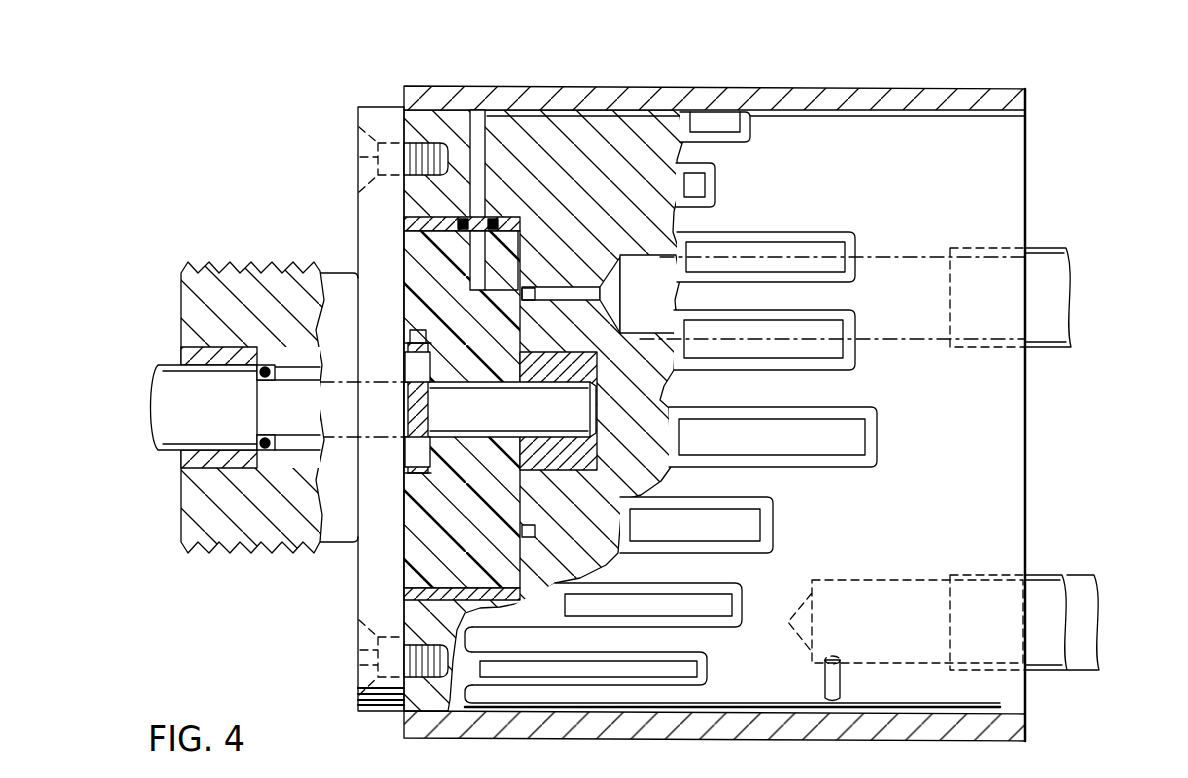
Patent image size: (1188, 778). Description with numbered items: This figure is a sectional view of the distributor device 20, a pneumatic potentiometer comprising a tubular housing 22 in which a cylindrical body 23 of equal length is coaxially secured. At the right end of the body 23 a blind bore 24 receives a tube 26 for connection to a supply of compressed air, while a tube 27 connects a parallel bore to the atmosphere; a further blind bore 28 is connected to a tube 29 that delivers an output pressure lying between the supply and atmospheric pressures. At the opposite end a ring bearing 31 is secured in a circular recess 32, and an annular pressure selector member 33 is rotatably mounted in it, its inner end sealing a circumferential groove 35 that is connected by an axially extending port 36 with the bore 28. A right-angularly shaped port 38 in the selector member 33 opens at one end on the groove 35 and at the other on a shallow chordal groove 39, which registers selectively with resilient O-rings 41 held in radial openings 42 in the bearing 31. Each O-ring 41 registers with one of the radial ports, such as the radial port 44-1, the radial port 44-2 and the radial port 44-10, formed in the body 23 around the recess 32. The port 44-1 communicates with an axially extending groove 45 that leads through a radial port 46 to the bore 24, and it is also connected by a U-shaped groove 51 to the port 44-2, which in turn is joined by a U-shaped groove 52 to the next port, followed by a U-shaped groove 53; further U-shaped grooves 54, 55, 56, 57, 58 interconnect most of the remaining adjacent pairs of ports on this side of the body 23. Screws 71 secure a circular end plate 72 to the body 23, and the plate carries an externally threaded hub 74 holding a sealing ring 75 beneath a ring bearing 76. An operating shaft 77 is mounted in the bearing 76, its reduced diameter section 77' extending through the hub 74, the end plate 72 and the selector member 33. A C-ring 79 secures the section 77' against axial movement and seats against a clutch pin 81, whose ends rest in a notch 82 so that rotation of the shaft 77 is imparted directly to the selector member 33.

The distributor device 20 is at (760, 84).
The tubular housing 22 is at (551, 88).
The cylindrical body 23 is at (1028, 153).
The blind bore 24 is at (896, 580).
The tube 26 is at (1035, 586).
The tube 27 is at (1072, 595).
The blind bore 28 is at (664, 294).
The tube 29 is at (1040, 249).
The ring bearing 31 is at (412, 586).
The circular recess 32 is at (404, 218).
The pressure selector member 33 is at (522, 333).
The circumferential groove 35 is at (528, 300).
The axially extending port 36 is at (568, 289).
The right-angularly shaped port 38 is at (470, 270).
The chordal groove 39 is at (470, 243).
The O-ring 41 is at (495, 225).
The radial opening 42 is at (505, 228).
The radial port 44-1 is at (477, 705).
The radial port 44-2 is at (475, 651).
The radial port 44-10 is at (487, 125).
The axially extending groove 45 is at (788, 709).
The radial port 46 is at (842, 680).
The U-shaped groove 51 is at (708, 668).
The U-shaped groove 52 is at (743, 606).
The U-shaped groove 53 is at (775, 526).
The U-shaped groove 54 is at (879, 440).
The U-shaped groove 55 is at (856, 358).
The U-shaped groove 56 is at (856, 271).
The U-shaped groove 57 is at (716, 186).
The U-shaped groove 58 is at (752, 131).
The screw 71 is at (378, 158).
The end plate 72 is at (358, 711).
The hub 74 is at (208, 548).
The sealing ring 75 is at (266, 452).
The ring bearing 76 is at (182, 350).
The operating shaft 77 is at (214, 432).
The reduced diameter section 77' is at (526, 411).
The C-ring 79 is at (410, 451).
The clutch pin 81 is at (410, 361).
The notch 82 is at (416, 342).